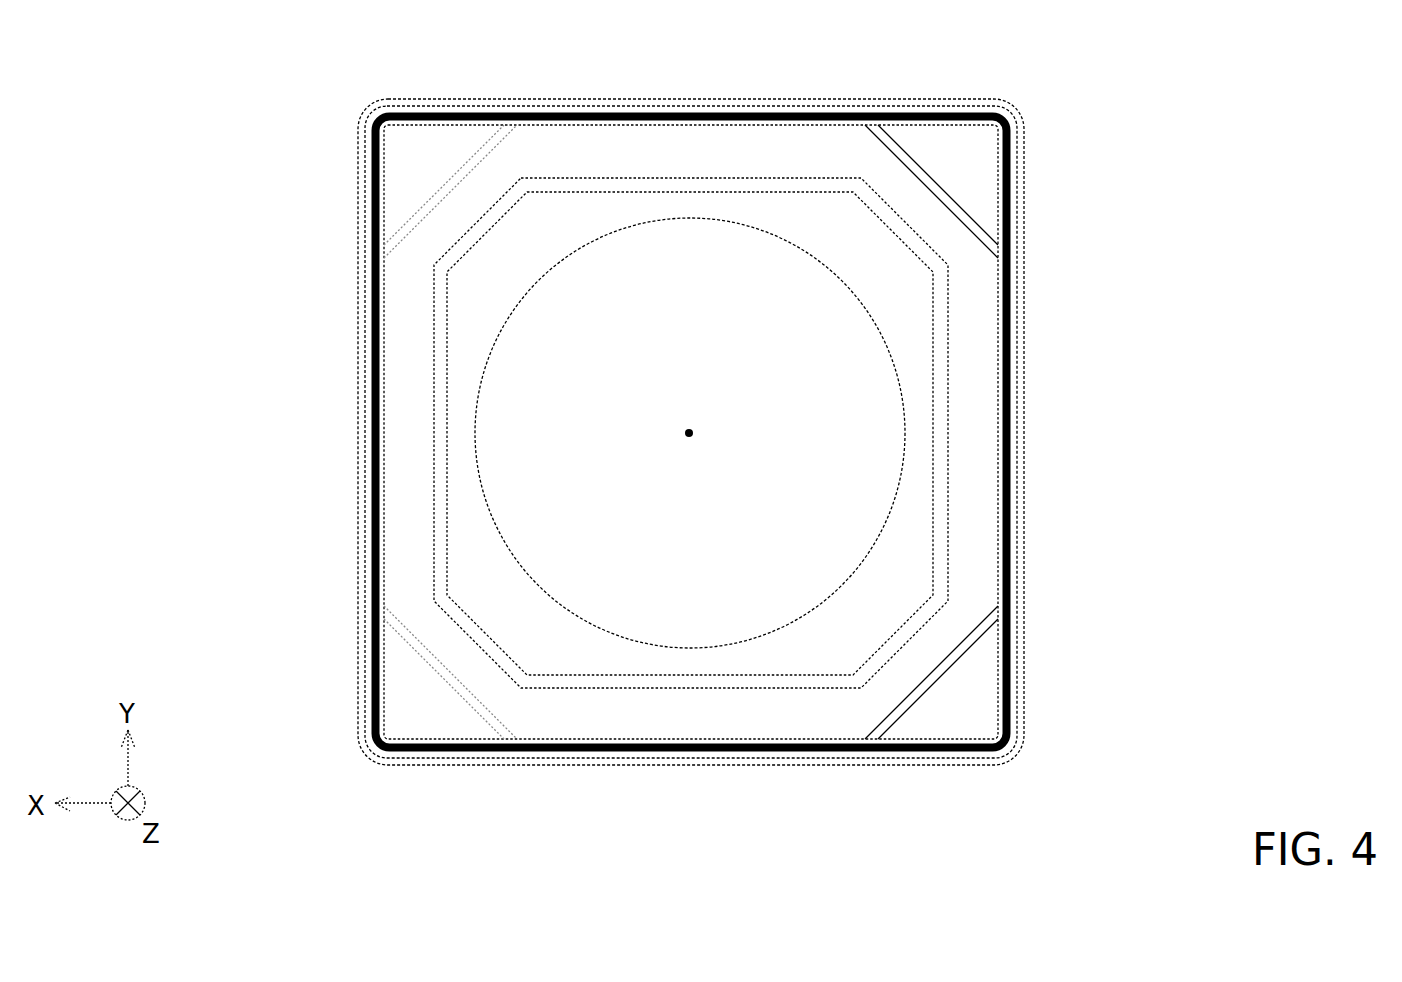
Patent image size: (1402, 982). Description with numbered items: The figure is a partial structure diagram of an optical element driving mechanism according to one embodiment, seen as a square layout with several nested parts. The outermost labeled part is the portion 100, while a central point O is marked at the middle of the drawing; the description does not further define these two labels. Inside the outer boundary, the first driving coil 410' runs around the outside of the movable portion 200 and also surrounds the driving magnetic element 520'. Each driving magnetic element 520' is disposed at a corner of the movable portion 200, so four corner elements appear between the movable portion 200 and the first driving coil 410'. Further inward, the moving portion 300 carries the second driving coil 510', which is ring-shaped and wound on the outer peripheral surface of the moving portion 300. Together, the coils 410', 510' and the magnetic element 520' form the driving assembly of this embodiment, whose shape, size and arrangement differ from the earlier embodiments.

The housing 100 is at (1022, 345).
The movable portion 200 is at (632, 142).
The moving portion 300 is at (813, 218).
The first driving coil 410' is at (766, 432).
The second driving coil 510' is at (816, 433).
The driving magnetic element 520' is at (690, 432).
The optical axis O is at (716, 448).